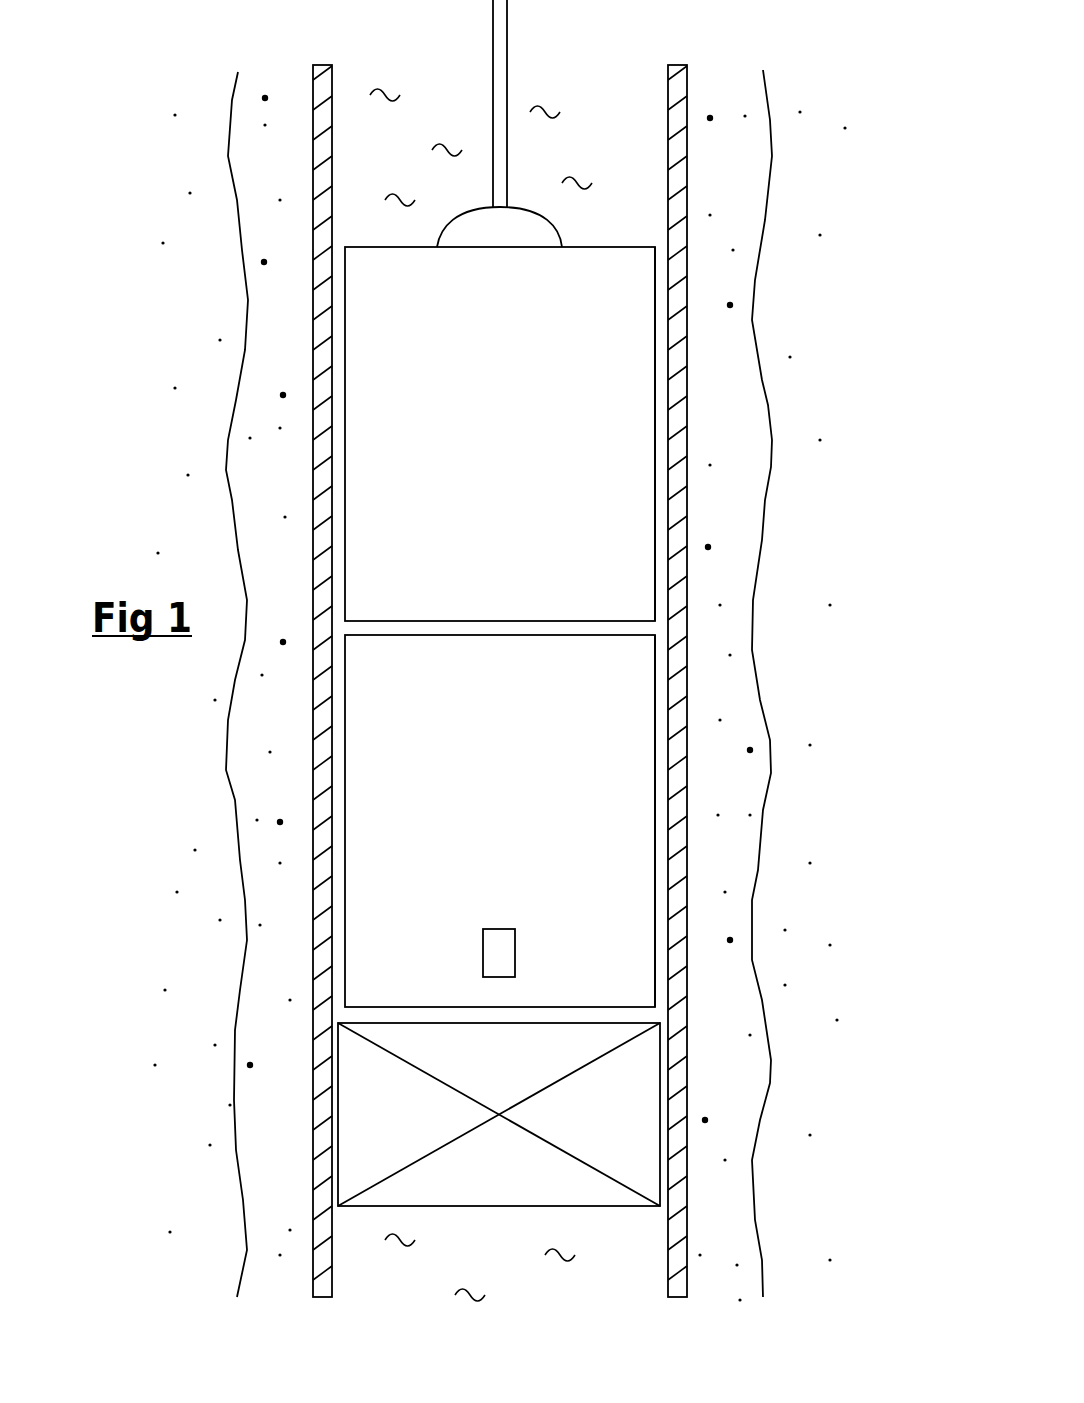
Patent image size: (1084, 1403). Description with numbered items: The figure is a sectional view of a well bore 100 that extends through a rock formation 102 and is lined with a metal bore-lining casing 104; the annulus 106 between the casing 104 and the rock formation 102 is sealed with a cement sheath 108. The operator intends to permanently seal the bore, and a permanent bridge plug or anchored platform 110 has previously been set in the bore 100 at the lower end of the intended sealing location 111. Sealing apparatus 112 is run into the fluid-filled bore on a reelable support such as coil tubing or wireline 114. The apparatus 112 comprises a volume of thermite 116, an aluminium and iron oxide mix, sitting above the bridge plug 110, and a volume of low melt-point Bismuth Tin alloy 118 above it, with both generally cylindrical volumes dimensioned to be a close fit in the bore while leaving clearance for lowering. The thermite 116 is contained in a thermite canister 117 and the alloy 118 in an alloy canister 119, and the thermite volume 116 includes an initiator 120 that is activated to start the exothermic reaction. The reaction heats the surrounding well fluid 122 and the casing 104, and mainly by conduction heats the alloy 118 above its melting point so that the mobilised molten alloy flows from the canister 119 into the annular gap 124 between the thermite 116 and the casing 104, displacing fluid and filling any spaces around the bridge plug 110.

The well bore 100 is at (623, 157).
The rock formation 102 is at (906, 232).
The metal bore-lining casing 104 is at (688, 280).
The annulus 106 is at (717, 405).
The cement sheath 108 is at (773, 467).
The permanent bridge plug 110 is at (660, 1083).
The intended sealing location 111 is at (200, 722).
The sealing apparatus 112 is at (200, 281).
The wireline 114 is at (507, 29).
The volume of thermite 116 is at (520, 835).
The thermite canister 117 is at (655, 773).
The low melt-point alloy 118 is at (520, 450).
The alloy canister 119 is at (655, 527).
The initiator 120 is at (500, 953).
The well fluid 122 is at (373, 156).
The annular gap 124 is at (338, 961).